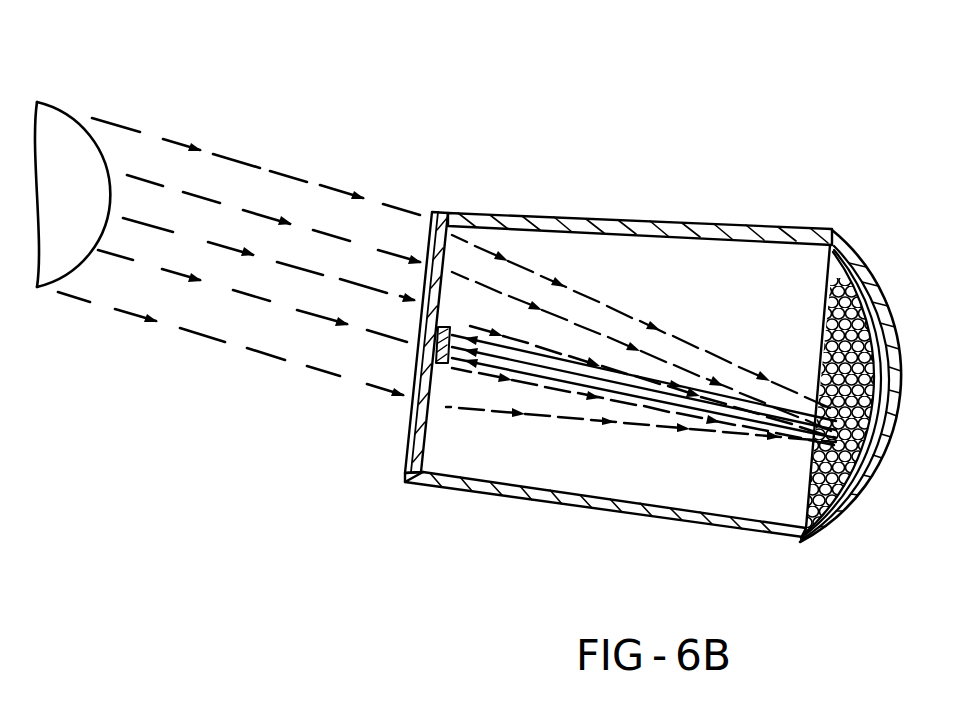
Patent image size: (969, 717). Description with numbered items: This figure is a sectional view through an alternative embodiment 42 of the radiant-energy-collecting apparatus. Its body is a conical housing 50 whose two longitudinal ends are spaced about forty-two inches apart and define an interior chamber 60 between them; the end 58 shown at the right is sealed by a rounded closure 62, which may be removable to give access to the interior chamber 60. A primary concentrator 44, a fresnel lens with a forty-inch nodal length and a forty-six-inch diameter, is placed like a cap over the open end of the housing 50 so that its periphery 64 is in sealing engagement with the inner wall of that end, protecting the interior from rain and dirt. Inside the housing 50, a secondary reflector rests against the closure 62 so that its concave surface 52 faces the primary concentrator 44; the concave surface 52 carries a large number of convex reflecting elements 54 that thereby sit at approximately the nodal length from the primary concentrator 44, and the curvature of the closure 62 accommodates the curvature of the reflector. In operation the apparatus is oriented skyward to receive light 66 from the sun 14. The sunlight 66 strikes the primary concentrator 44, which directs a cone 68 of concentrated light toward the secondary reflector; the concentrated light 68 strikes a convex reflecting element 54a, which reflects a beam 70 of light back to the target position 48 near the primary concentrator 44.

The sun 14 is at (45, 102).
The light 66 is at (185, 140).
The alternative embodiment 42 is at (438, 158).
The periphery 64 is at (447, 214).
The conical housing 50 is at (590, 214).
The rounded closure 62 is at (862, 250).
The beam of light 70 is at (520, 345).
The interior chamber 60 is at (670, 275).
The concave surface 52 is at (822, 316).
The target position 48 is at (437, 362).
The primary concentrator 44 is at (410, 424).
The cone of concentrated light 68 is at (532, 418).
The convex reflecting elements 54 is at (810, 450).
The convex reflecting element 54a is at (873, 485).
The end 58 is at (807, 537).